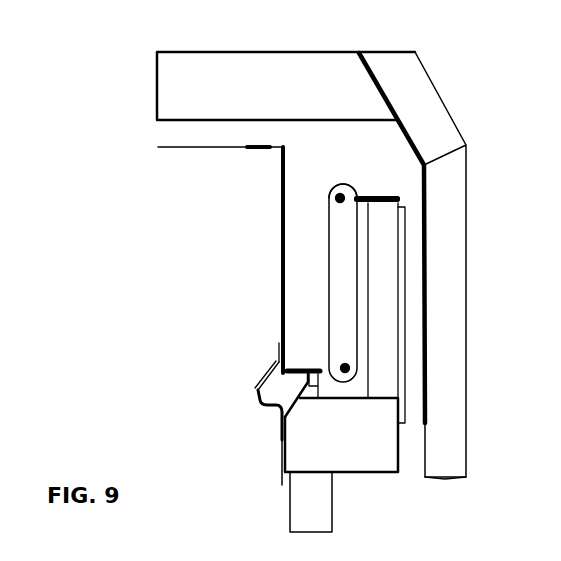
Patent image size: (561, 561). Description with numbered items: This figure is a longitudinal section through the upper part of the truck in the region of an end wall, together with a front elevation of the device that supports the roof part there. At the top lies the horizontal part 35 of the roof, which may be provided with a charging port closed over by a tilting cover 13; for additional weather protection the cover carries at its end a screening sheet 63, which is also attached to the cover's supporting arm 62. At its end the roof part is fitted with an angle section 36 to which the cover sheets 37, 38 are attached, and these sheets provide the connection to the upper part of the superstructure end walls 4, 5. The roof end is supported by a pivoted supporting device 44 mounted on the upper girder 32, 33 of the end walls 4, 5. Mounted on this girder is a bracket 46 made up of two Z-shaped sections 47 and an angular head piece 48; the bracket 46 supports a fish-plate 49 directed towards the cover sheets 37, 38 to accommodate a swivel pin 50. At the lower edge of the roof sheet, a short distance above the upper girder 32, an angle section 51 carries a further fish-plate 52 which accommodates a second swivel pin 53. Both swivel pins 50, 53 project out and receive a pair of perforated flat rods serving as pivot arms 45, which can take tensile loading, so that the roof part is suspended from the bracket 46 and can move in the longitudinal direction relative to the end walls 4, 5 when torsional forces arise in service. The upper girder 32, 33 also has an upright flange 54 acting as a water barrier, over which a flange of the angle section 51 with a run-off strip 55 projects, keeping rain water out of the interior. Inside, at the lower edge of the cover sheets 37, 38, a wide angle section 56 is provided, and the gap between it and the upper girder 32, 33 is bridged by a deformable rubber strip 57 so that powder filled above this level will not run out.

The tilting cover 13 is at (190, 80).
The screening sheet 63 is at (385, 96).
The supporting arm 62 is at (455, 470).
The horizontal part 35 is at (191, 150).
The angle section 36 is at (268, 150).
The cover sheet 37 is at (241, 260).
The cover sheet 38 is at (281, 237).
The angle section 51 is at (284, 352).
The wide angle section 56 is at (268, 380).
The deformable rubber strip 57 is at (262, 401).
The fish-plate 52 is at (298, 368).
The run-off strip 55 is at (317, 378).
The upright flange 54 is at (305, 388).
The upper girder 32 is at (363, 466).
The upper girder 33 is at (348, 452).
The end wall 4 is at (271, 503).
The end wall 5 is at (310, 502).
The pivot arm 45 is at (346, 260).
The swivel pin 50 is at (330, 194).
The pivoted supporting device 44 is at (341, 176).
The swivel pin 53 is at (348, 374).
The fish-plate 49 is at (374, 196).
The angular head piece 48 is at (397, 198).
The Z-shaped section 47 is at (384, 355).
The bracket 46 is at (424, 260).